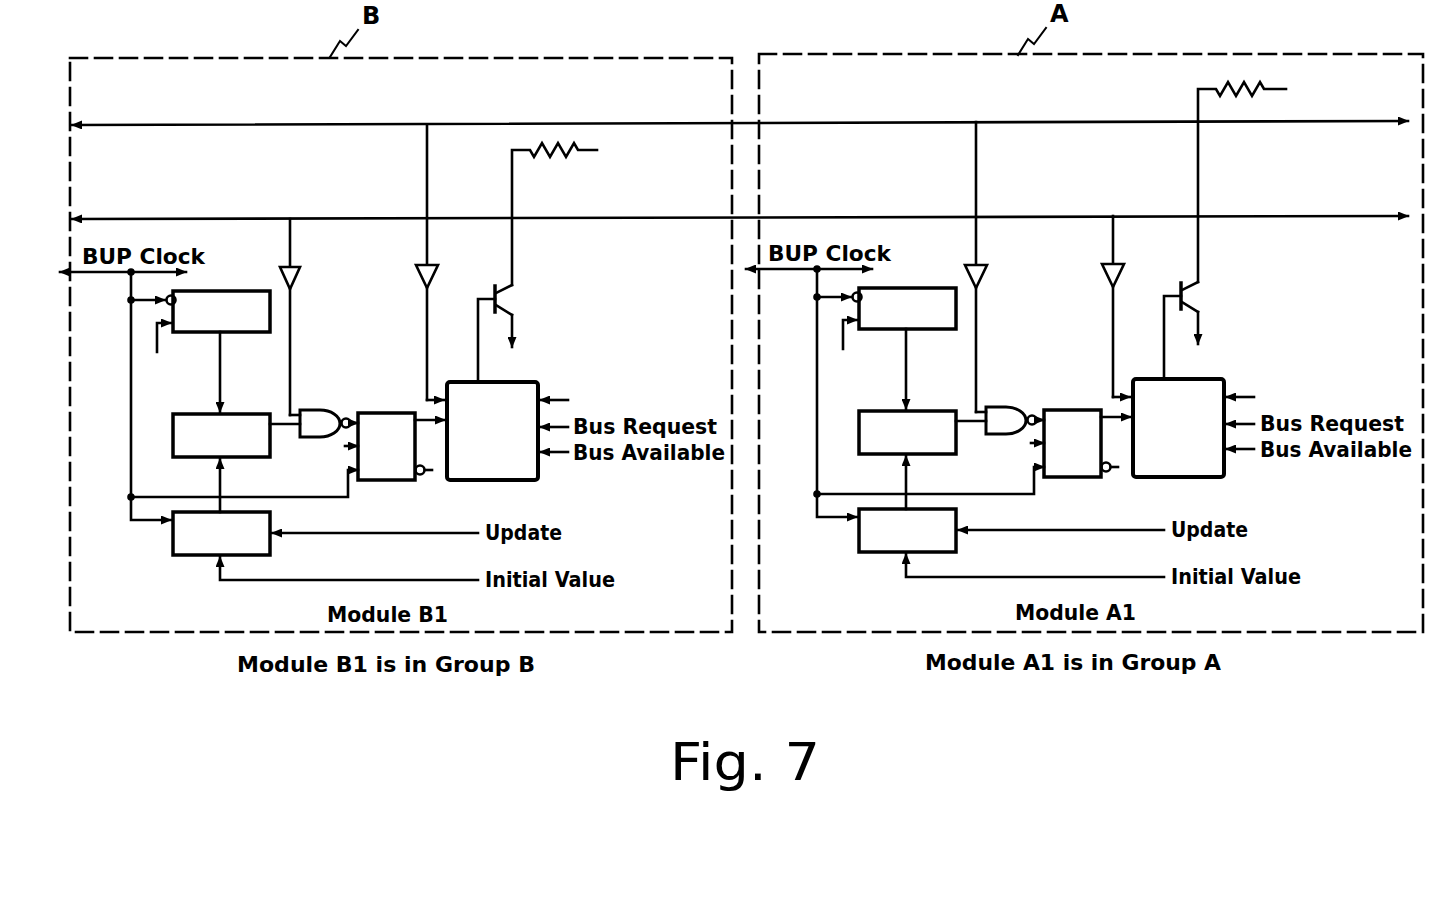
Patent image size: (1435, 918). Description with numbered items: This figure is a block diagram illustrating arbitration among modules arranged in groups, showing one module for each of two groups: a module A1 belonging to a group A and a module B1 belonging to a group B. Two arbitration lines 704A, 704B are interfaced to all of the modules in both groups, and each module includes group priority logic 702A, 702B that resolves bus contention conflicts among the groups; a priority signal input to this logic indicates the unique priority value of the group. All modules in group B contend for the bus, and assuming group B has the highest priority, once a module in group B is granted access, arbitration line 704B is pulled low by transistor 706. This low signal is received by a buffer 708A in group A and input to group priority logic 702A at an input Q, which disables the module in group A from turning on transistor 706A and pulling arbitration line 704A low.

The arbitration line 704A is at (333, 124).
The arbitration line 704B is at (333, 219).
The transistor 706 is at (537, 262).
The transistor 706A is at (1225, 230).
The buffer 708A is at (1103, 272).
The group priority logic 702B is at (540, 482).
The group priority logic 702A is at (1225, 447).